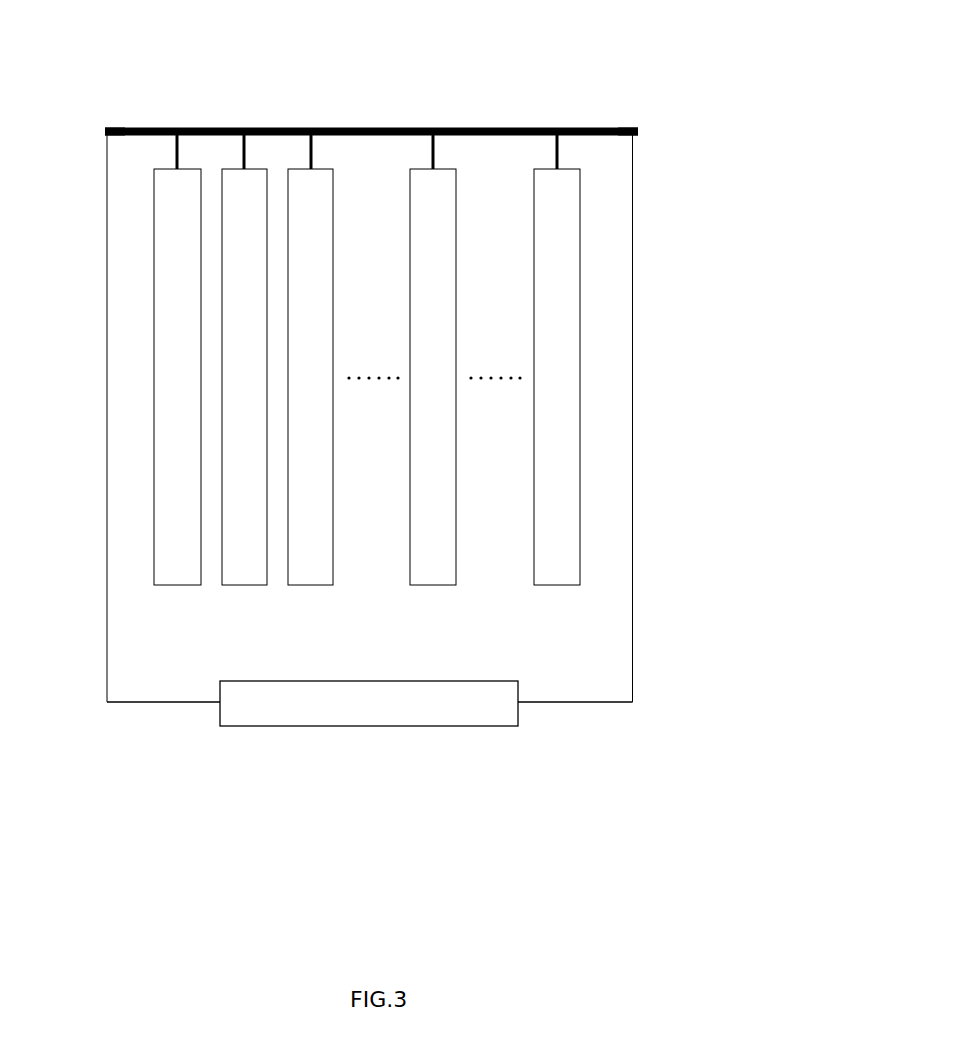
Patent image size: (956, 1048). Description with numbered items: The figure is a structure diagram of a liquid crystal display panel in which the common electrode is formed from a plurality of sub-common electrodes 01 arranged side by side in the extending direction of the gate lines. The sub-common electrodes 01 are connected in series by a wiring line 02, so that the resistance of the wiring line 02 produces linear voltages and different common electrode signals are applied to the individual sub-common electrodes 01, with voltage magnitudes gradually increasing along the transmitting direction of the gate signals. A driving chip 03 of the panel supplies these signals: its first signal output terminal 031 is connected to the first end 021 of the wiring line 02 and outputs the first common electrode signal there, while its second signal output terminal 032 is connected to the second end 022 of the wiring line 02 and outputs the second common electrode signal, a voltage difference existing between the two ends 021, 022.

The sub-common electrode 01 is at (177, 586).
The wiring line 02 is at (363, 127).
The first end of the wiring line 021 is at (104, 128).
The second end of the wiring line 022 is at (638, 128).
The driving chip 03 is at (343, 726).
The first signal output terminal 031 is at (220, 706).
The second signal output terminal 032 is at (518, 706).